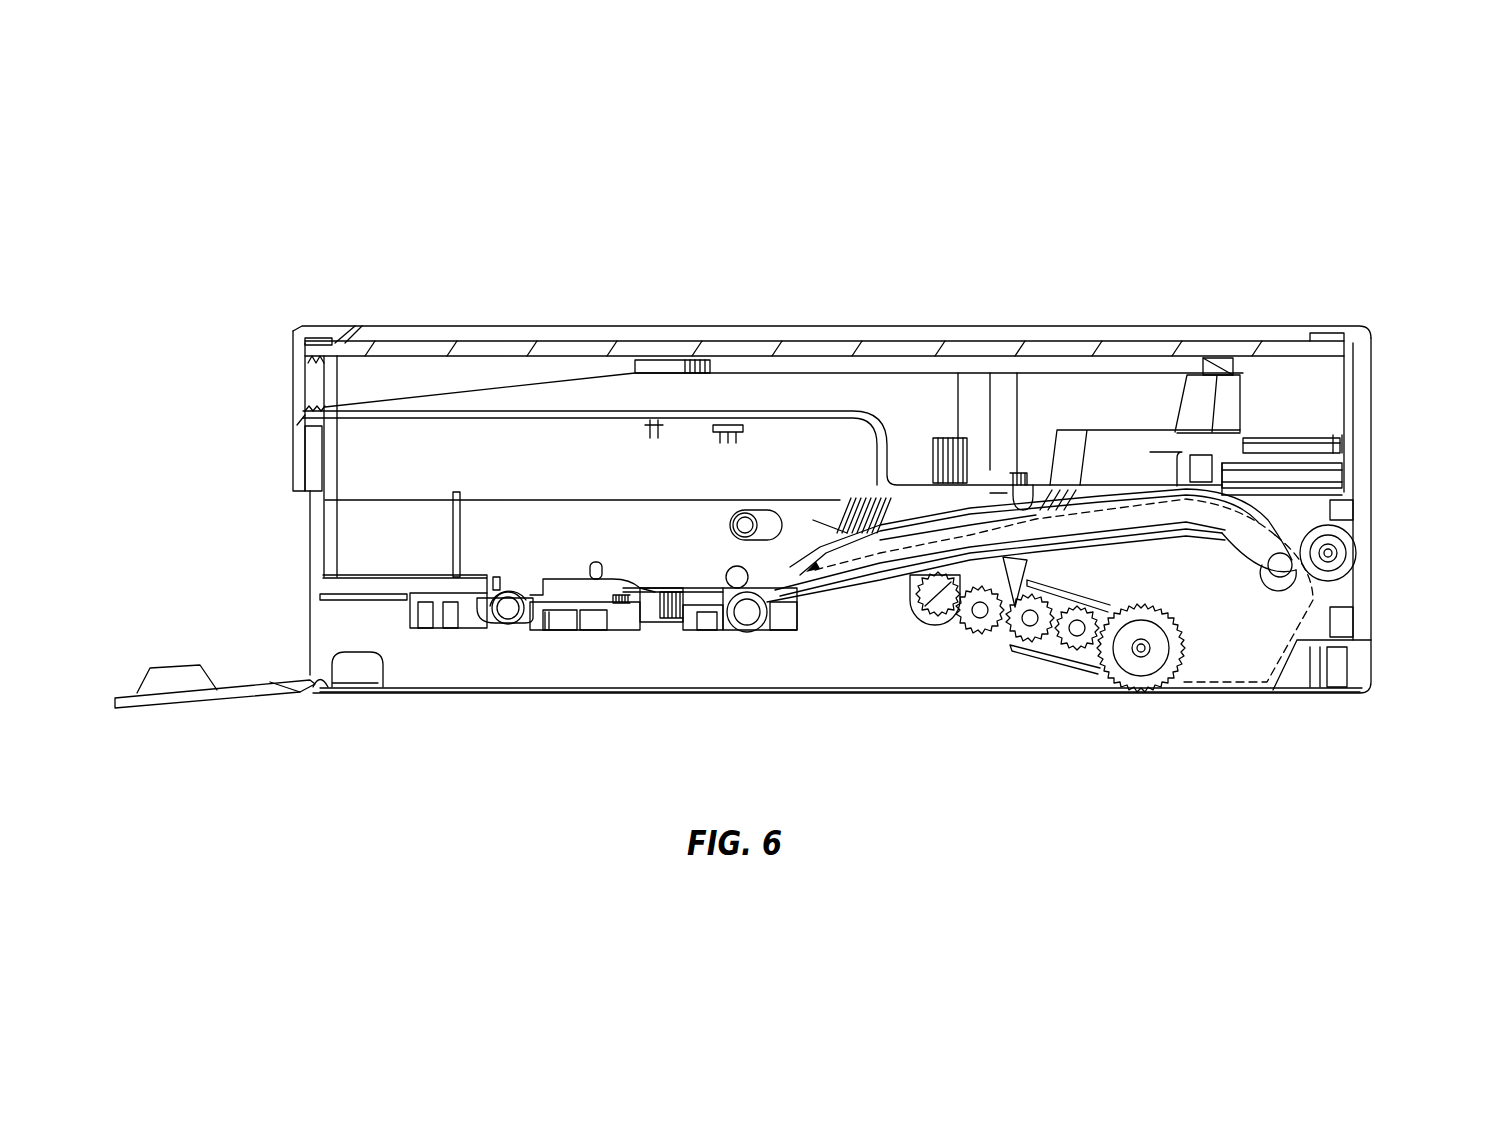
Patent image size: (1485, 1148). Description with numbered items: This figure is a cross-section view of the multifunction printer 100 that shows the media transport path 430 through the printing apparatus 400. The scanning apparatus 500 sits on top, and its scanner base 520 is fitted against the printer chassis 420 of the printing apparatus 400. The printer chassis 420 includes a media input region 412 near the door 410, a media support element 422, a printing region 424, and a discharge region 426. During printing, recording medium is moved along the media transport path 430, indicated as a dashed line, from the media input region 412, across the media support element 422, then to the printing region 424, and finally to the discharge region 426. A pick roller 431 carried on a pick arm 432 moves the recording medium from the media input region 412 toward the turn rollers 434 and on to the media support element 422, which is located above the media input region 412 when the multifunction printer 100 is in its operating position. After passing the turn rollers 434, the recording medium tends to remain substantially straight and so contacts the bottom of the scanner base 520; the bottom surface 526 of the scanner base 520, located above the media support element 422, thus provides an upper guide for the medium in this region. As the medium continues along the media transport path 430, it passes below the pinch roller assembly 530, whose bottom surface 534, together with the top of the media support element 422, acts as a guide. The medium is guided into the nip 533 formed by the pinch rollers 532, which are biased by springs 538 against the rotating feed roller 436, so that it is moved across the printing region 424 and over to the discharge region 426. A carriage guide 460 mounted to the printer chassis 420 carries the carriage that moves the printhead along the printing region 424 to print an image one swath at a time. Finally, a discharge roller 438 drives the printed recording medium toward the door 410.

The multifunction printer 100 is at (366, 243).
The printing apparatus 400 is at (287, 610).
The door 410 is at (225, 700).
The media input region 412 is at (603, 655).
The printer chassis 420 is at (1375, 595).
The media support element 422 is at (1288, 542).
The printing region 424 is at (640, 583).
The discharge region 426 is at (520, 575).
The media transport path 430 is at (1300, 620).
The pick roller 431 is at (1142, 690).
The pick arm 432 is at (1013, 650).
The turn rollers 434 is at (1258, 567).
The feed roller 436 is at (748, 632).
The discharge roller 438 is at (507, 610).
The carriage guide 460 is at (725, 512).
The scanning apparatus 500 is at (275, 418).
The scanner base 520 is at (1376, 425).
The bottom surface of scanner base 526 is at (1093, 510).
The pinch roller assembly 530 is at (787, 512).
The pinch rollers 532 is at (728, 570).
The nip 533 is at (720, 582).
The bottom surface of pinch roller assembly 534 is at (880, 540).
The springs 538 is at (848, 497).